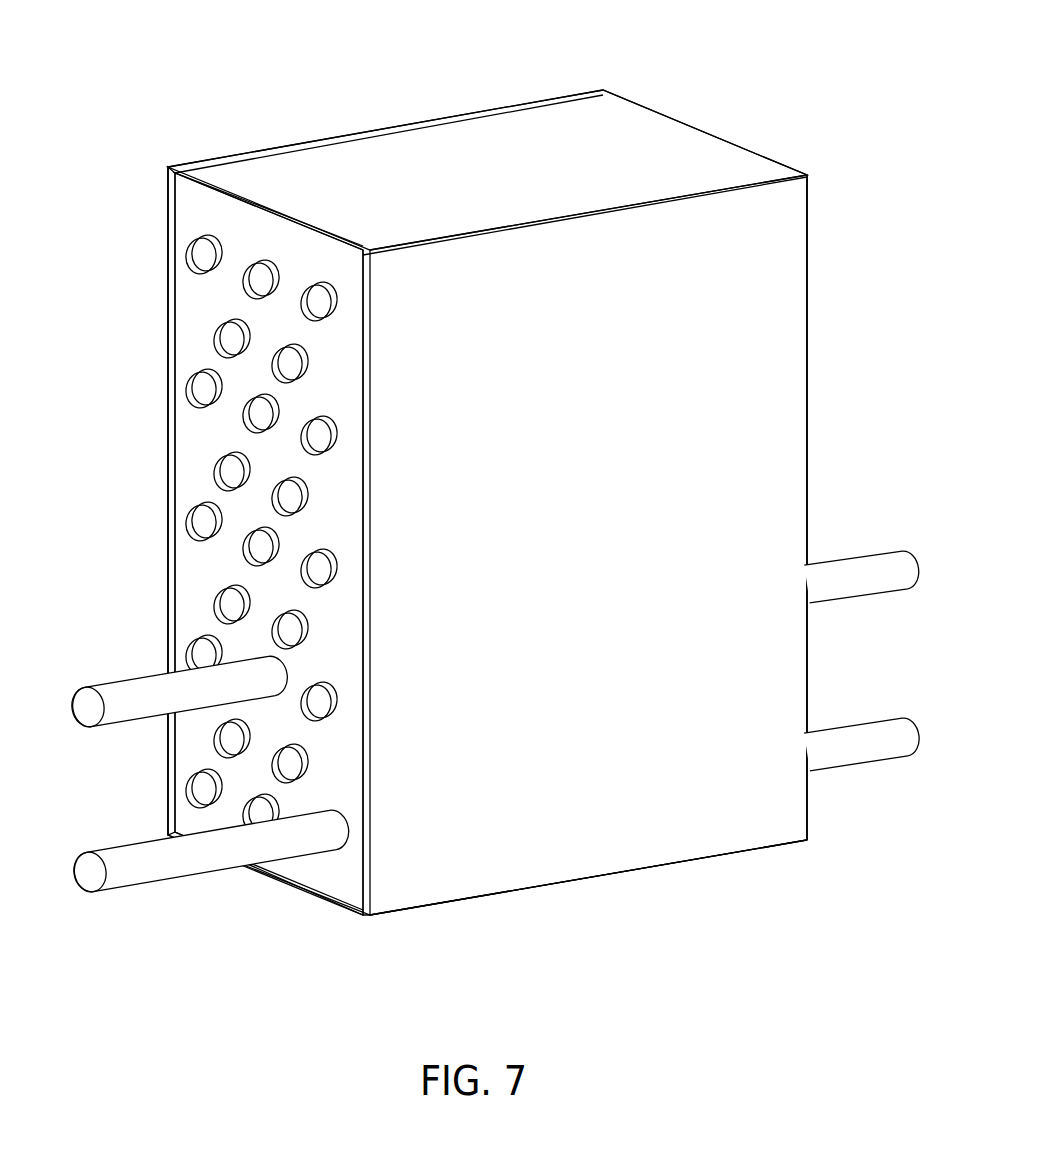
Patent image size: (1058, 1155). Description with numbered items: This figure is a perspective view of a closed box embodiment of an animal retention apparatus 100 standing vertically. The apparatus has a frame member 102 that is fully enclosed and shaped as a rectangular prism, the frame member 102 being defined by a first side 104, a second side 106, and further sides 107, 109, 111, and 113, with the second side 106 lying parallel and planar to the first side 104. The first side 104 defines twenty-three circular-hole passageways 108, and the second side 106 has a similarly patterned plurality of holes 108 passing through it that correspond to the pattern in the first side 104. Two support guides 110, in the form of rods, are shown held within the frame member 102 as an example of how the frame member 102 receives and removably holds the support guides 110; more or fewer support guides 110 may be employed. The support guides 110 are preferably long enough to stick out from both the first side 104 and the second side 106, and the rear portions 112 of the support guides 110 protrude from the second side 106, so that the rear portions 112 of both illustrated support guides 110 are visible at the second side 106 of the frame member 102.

The animal retention apparatus 100 is at (836, 193).
The frame member 102 is at (362, 913).
The first side 104 is at (195, 215).
The second side 106 is at (820, 352).
The side 107 is at (413, 173).
The passageways 108 is at (228, 467).
The side 109 is at (637, 920).
The support guides 110 is at (140, 702).
The side 111 is at (732, 825).
The rear portions 112 is at (892, 572).
The side 113 is at (142, 562).